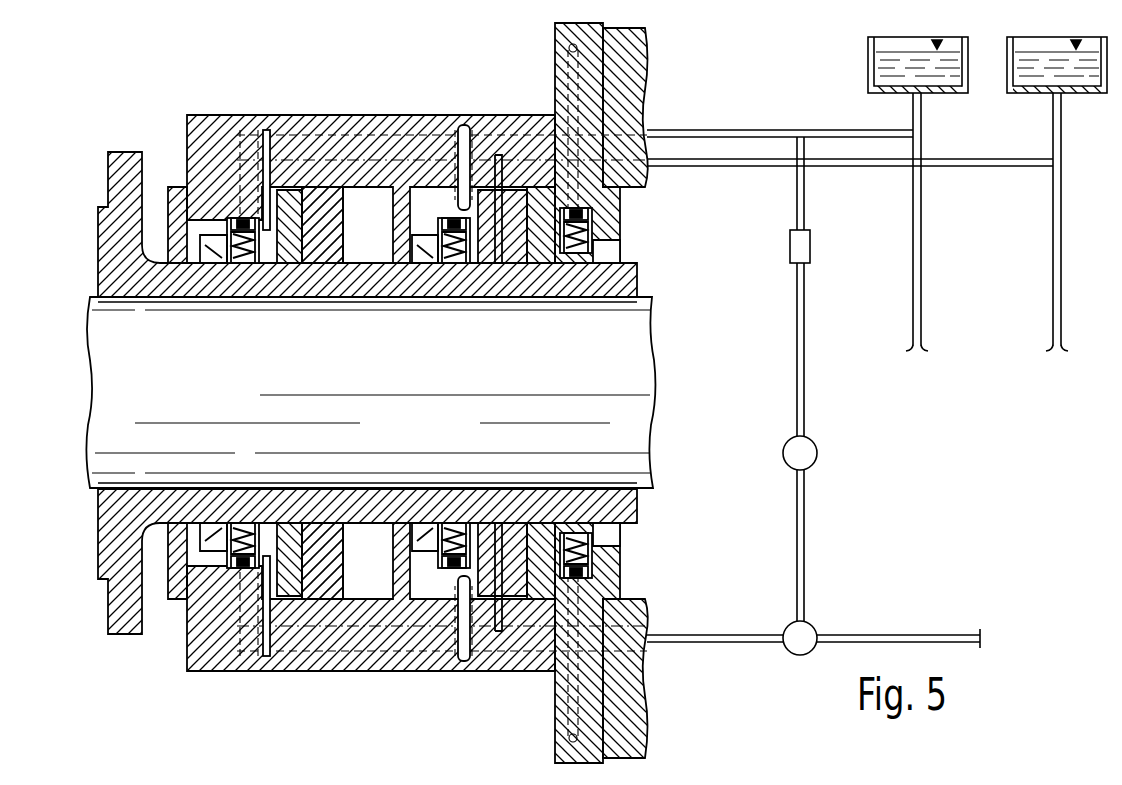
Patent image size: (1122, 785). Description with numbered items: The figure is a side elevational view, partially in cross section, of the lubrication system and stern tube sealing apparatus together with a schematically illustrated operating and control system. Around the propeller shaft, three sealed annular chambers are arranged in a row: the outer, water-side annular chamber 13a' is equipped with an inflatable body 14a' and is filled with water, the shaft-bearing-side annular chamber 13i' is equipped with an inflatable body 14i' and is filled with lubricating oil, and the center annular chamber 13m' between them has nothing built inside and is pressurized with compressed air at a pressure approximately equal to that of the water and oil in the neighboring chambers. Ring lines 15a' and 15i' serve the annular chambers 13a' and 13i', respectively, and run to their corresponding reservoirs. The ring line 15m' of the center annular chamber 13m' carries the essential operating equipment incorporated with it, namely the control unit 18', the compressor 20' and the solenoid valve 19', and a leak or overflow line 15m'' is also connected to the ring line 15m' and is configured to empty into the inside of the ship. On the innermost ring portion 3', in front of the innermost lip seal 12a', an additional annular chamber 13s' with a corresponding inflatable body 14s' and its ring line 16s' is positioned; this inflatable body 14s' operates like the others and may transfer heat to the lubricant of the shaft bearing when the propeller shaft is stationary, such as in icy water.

The innermost ring portion 3' is at (561, 142).
The inflatable body 14a' is at (224, 165).
The annular chamber 13a' is at (276, 165).
The center annular chamber 13m' is at (338, 165).
The inflatable body 14i' is at (441, 165).
The annular chamber 13i' is at (502, 165).
The ring line 16s' is at (654, 107).
The ring line 15a' is at (780, 98).
The ring line 15i' is at (850, 194).
The inflatable body 14s' is at (622, 225).
The annular chamber 13s' is at (657, 256).
The control unit 18' is at (825, 230).
The ring line 15m' is at (843, 379).
The innermost lip seal 12a' is at (367, 374).
The compressor 20' is at (830, 453).
The solenoid valve 19' is at (834, 610).
The leak line 15m'' is at (828, 606).